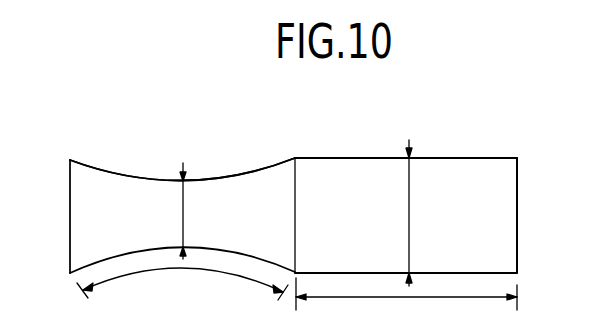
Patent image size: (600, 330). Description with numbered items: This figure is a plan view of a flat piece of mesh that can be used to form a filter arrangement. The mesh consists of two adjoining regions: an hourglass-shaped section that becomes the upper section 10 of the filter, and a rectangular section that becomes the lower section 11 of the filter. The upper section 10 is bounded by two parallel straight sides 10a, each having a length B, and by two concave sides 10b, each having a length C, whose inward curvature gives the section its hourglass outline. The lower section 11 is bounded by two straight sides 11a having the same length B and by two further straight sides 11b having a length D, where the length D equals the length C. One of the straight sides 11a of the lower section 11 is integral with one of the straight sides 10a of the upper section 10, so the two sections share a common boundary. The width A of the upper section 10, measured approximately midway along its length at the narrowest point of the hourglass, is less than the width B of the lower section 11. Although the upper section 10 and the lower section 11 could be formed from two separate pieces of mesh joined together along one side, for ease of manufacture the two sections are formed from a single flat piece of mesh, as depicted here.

The upper section 10 is at (82, 210).
The straight sides of the upper section 10a is at (70, 181).
The concave sides of the upper section 10b is at (262, 170).
The lower section 11 is at (480, 166).
The straight sides of the lower section 11a is at (517, 205).
The straight sides of the lower section 11b is at (356, 158).
The width of the upper section A is at (180, 194).
The length of straight sides B is at (405, 198).
The length of concave sides C is at (182, 284).
The length of lower section sides D is at (406, 302).